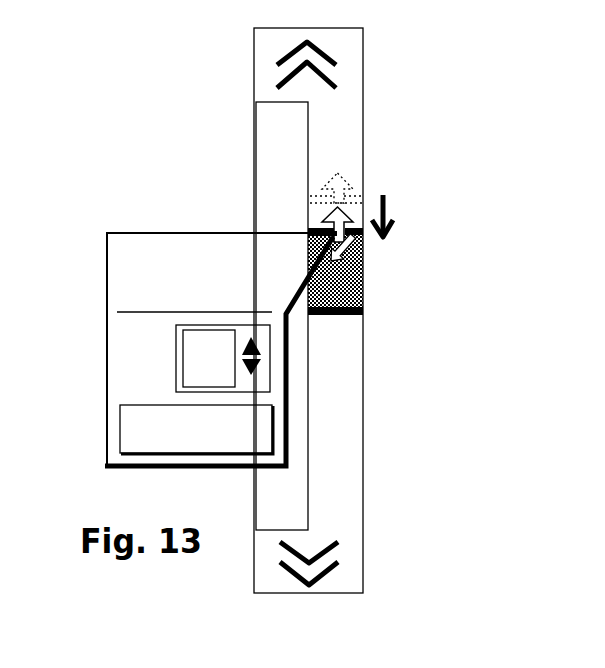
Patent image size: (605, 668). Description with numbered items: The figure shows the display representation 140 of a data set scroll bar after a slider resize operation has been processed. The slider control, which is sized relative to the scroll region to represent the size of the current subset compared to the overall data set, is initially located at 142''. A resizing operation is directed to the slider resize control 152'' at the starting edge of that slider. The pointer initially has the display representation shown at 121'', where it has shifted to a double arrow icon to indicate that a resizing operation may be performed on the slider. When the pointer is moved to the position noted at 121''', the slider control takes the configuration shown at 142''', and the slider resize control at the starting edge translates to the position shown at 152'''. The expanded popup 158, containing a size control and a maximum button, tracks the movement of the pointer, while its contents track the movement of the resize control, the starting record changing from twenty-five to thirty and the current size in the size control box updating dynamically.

The display representation of data set scroll bar 140 is at (244, 58).
The slider control (initial position) 142'' is at (271, 180).
The slider resize control (translated position) 152''' is at (274, 211).
The expanded popup 158 is at (98, 322).
The pointer display representation (initial) 121'' is at (386, 170).
The slider resize control (initial position) 152'' is at (389, 183).
The pointer display representation (moved position) 121''' is at (399, 248).
The slider control (resized configuration) 142''' is at (377, 304).